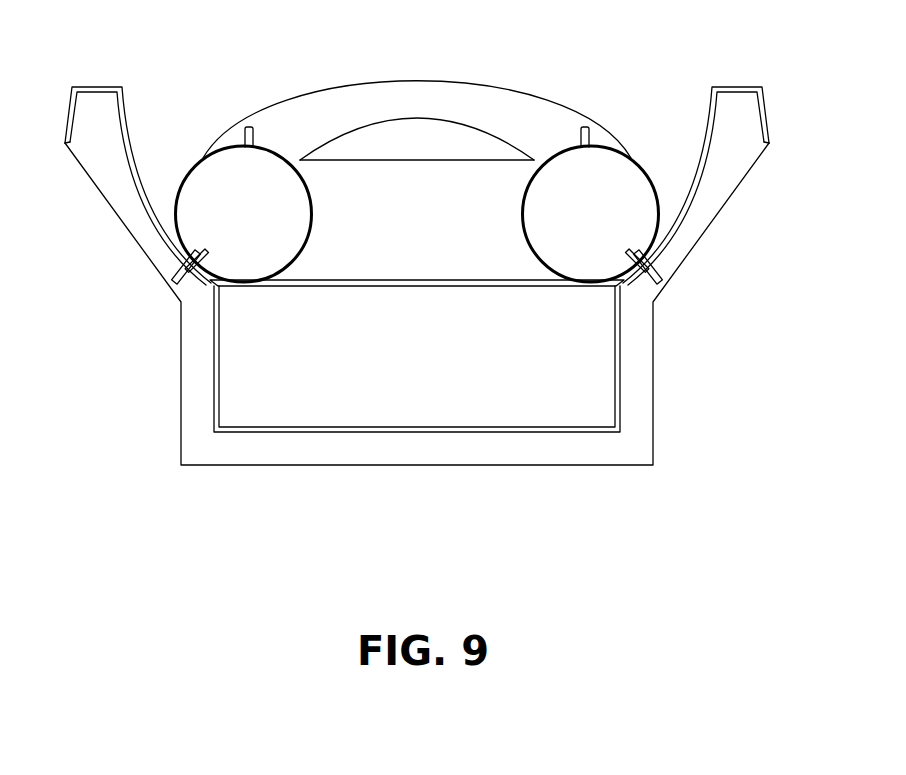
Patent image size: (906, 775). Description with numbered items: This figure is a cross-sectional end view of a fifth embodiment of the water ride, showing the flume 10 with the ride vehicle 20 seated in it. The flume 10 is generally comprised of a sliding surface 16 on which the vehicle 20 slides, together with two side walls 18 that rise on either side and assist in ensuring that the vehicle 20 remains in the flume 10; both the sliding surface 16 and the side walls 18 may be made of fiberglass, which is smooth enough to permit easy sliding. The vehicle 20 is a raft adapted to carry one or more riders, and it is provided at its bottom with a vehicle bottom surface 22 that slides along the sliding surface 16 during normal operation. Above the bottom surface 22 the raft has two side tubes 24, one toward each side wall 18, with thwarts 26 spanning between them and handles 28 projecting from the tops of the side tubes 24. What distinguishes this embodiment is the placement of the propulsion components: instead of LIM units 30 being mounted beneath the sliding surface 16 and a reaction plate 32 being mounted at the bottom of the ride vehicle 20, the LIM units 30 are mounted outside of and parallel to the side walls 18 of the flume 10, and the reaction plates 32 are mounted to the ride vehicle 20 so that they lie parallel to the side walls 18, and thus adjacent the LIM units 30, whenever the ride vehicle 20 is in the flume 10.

The flume 10 is at (555, 473).
The sliding surface 16 is at (465, 287).
The side walls 18 is at (97, 163).
The vehicle 20 is at (453, 75).
The vehicle bottom surface 22 is at (450, 278).
The side tubes 24 is at (245, 227).
The thwarts 26 is at (432, 230).
The handles 28 is at (589, 125).
The LIM units 30 is at (656, 258).
The reaction plates 32 is at (637, 253).